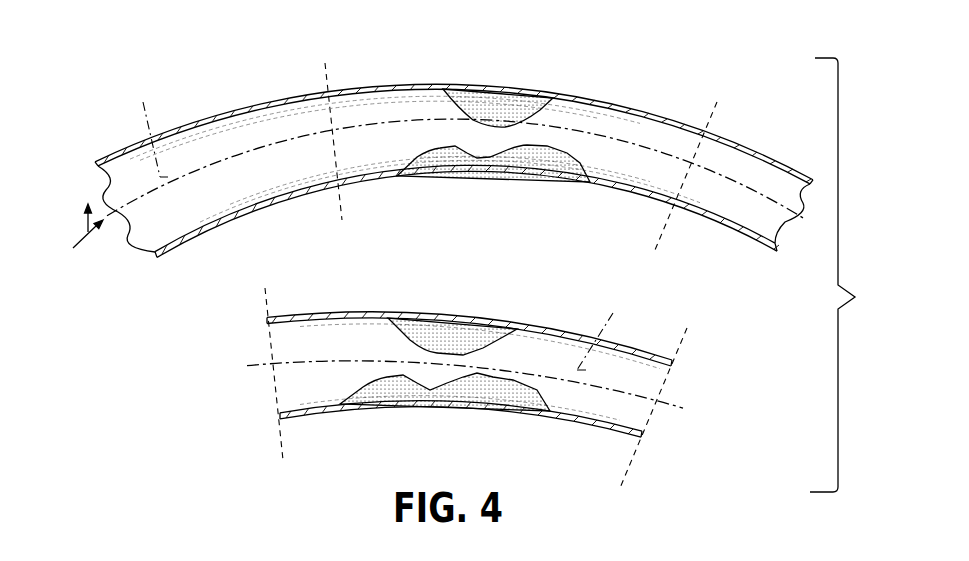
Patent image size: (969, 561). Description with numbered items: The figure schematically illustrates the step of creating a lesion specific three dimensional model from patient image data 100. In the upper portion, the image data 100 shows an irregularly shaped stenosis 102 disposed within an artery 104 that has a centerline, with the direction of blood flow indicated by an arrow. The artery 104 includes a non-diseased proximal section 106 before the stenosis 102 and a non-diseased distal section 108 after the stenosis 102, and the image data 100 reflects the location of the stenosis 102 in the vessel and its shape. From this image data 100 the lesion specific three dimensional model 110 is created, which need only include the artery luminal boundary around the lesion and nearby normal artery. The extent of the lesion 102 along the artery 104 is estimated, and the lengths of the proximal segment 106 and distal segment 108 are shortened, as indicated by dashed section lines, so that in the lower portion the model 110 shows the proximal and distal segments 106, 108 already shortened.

The image data 100 is at (636, 74).
The stenosis 102 is at (507, 113).
The artery 104 is at (306, 208).
The proximal section 106 is at (257, 100).
The distal section 108 is at (772, 161).
The lesion specific 3D model 110 is at (397, 282).